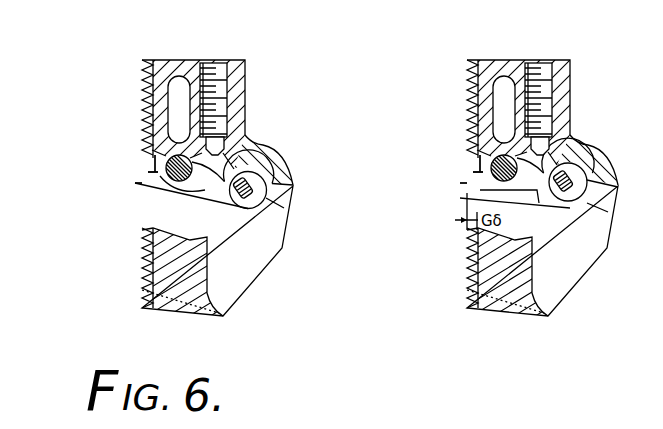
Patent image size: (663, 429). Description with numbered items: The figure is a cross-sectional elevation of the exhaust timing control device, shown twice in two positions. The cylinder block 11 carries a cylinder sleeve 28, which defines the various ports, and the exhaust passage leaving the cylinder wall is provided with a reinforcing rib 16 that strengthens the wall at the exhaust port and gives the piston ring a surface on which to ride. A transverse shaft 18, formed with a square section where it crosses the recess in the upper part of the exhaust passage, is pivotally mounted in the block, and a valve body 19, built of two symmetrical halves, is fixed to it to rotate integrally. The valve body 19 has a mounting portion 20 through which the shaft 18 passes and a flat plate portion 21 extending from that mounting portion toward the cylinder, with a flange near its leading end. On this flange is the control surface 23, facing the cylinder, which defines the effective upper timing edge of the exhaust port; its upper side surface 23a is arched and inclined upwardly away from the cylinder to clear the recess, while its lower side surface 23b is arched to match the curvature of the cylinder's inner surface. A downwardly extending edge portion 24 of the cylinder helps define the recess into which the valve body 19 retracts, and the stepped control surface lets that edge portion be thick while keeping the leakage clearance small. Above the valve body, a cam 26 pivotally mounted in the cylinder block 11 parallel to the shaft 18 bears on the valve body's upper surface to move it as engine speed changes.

The cylinder block 11 is at (204, 54).
The cylinder sleeve 28 is at (142, 78).
The edge portion 24 is at (166, 163).
The control surface 23 is at (78, 152).
The upper side surface 23a is at (153, 163).
The lower side surface 23b is at (136, 183).
The cam 26 is at (254, 157).
The mounting portion 20 is at (294, 186).
The flat plate portion 21 is at (197, 202).
The transverse shaft 18 is at (246, 207).
The valve body 19 is at (261, 220).
The reinforcing rib 16 is at (200, 270).